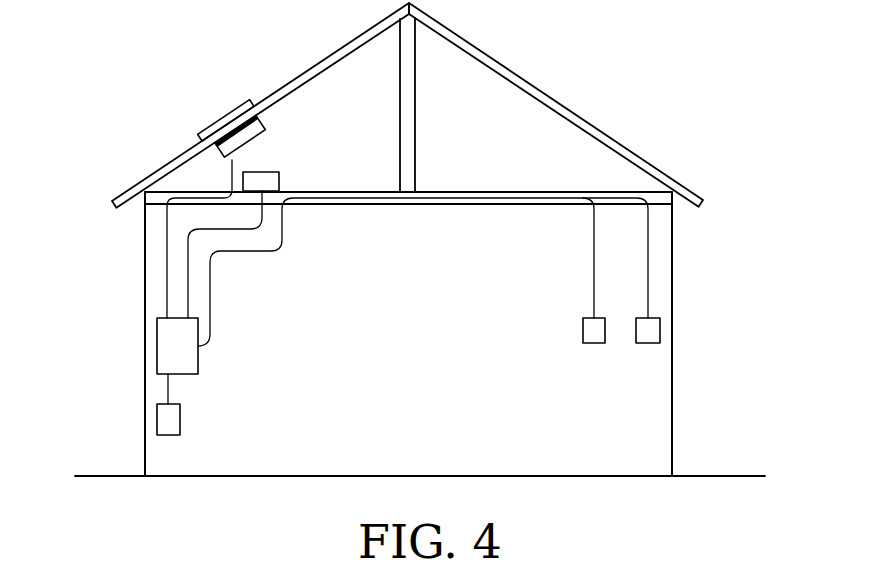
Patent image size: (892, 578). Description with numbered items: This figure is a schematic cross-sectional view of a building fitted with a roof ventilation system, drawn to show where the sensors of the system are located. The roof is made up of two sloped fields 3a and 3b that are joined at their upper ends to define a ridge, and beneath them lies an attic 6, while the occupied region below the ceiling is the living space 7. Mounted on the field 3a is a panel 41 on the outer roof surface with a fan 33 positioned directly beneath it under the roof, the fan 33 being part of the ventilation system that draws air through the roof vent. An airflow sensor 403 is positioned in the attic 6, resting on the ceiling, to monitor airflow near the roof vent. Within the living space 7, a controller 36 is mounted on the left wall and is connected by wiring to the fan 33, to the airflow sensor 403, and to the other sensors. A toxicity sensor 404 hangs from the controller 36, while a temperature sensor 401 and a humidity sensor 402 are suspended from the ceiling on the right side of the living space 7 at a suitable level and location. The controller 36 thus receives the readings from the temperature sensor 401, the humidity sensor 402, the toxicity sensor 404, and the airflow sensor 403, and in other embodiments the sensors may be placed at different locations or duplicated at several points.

The field 3a is at (361, 36).
The field 3b is at (498, 63).
The attic 6 is at (527, 148).
The living space 7 is at (612, 415).
The solar panel 41 is at (217, 119).
The fan 33 is at (253, 133).
The airflow sensor 403 is at (277, 173).
The controller 36 is at (167, 347).
The toxicity sensor 404 is at (180, 418).
The temperature sensor 401 is at (583, 330).
The humidity sensor 402 is at (660, 328).